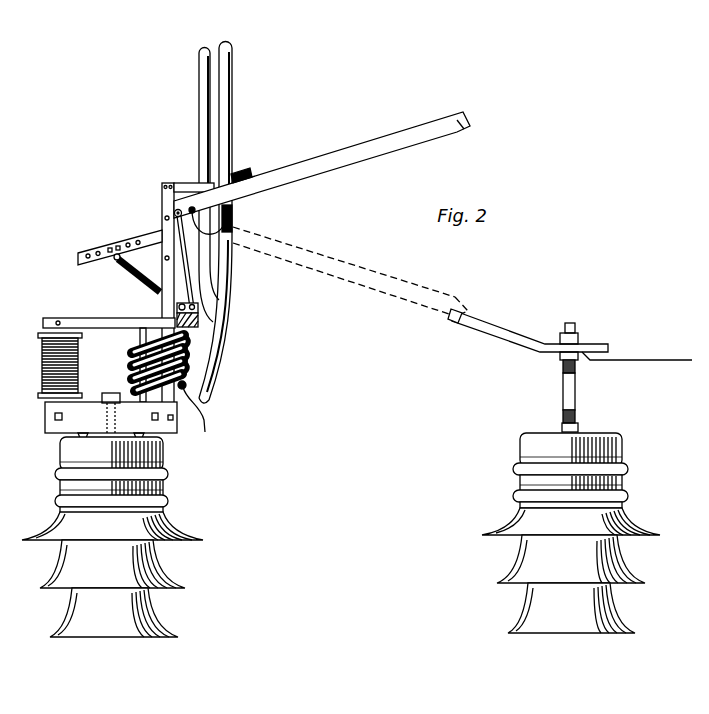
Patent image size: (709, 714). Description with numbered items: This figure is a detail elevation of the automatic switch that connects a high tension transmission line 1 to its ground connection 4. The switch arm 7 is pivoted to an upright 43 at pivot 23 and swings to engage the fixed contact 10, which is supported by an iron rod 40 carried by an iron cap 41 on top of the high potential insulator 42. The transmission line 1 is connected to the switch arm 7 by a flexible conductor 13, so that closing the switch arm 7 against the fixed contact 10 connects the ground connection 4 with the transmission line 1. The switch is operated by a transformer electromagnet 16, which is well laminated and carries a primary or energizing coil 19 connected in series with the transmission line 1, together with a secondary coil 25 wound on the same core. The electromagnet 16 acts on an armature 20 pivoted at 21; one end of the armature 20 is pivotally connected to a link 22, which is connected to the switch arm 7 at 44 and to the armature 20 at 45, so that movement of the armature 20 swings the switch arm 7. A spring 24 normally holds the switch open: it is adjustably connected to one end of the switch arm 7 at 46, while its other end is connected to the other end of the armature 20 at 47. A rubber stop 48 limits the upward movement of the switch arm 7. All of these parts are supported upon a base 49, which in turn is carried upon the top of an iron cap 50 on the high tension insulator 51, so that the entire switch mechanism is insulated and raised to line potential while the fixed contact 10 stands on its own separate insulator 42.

The transmission line 1 is at (203, 92).
The ground connection 4 is at (657, 360).
The automatic switch 7 is at (337, 158).
The fixed contact 10 is at (453, 322).
The flexible conductor 13 is at (233, 217).
The transformer electromagnet 16 is at (133, 417).
The primary coil 19 is at (201, 410).
The armature 20 is at (127, 320).
The armature pivot 21 is at (57, 322).
The link 22 is at (187, 272).
The switch arm pivot 23 is at (160, 218).
The spring 24 is at (130, 273).
The secondary coil 25 is at (42, 360).
The iron rod 40 is at (575, 393).
The iron cap 41 is at (625, 482).
The high potential insulator 42 is at (613, 567).
The upright 43 is at (166, 257).
The link connection to switch arm 44 is at (178, 209).
The link connection to armature 45 is at (199, 313).
The spring connection to switch arm 46 is at (115, 255).
The spring connection to armature 47 is at (197, 327).
The rubber stop 48 is at (247, 180).
The base 49 is at (80, 433).
The iron cap 50 is at (72, 490).
The high tension insulator 51 is at (147, 573).